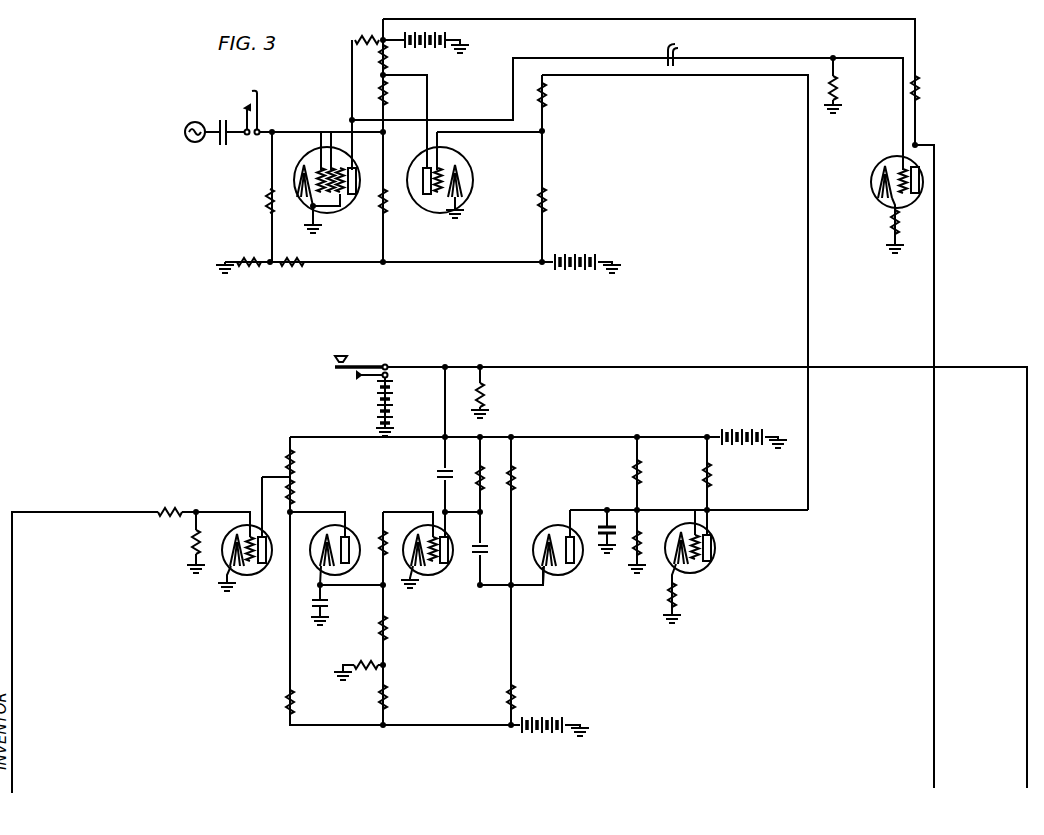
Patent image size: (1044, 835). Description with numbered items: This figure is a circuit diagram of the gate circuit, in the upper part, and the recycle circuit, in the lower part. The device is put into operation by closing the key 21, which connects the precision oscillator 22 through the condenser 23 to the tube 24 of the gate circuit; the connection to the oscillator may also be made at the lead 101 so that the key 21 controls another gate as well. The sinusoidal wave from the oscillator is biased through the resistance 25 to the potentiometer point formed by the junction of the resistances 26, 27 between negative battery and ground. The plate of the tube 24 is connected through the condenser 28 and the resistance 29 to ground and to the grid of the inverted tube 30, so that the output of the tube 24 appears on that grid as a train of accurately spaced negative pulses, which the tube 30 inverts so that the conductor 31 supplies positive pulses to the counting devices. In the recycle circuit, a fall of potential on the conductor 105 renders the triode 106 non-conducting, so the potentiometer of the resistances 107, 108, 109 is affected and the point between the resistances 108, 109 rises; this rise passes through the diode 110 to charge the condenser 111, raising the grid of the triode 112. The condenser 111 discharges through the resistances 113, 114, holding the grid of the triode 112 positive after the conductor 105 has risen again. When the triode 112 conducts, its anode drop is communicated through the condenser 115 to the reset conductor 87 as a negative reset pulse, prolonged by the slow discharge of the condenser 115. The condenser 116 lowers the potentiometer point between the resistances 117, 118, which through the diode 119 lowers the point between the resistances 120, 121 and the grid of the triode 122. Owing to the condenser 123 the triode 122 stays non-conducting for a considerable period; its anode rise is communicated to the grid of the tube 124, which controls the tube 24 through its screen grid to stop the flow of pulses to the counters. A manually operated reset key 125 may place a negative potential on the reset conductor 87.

The key 21 is at (259, 100).
The precision oscillator 22 is at (190, 142).
The condenser 23 is at (221, 118).
The tube 24 is at (333, 213).
The resistance 25 is at (262, 203).
The resistance 26 is at (292, 268).
The resistance 27 is at (250, 268).
The condenser 28 is at (676, 46).
The resistance 29 is at (841, 92).
The inverted tube 30 is at (871, 178).
The conductor 31 is at (934, 768).
The reset conductor 87 is at (516, 368).
The lead 101 is at (274, 129).
The conductor 105 is at (54, 512).
The triode 106 is at (247, 577).
The resistance 107 is at (295, 460).
The resistance 108 is at (295, 490).
The resistance 109 is at (285, 702).
The diode 110 is at (348, 530).
The condenser 111 is at (330, 600).
The triode 112 is at (433, 576).
The resistance 113 is at (390, 633).
The resistance 114 is at (356, 662).
The condenser 115 is at (437, 476).
The condenser 116 is at (500, 535).
The resistance 117 is at (516, 480).
The resistance 118 is at (505, 702).
The diode 119 is at (565, 575).
The resistance 120 is at (642, 478).
The resistance 121 is at (643, 547).
The triode 122 is at (700, 572).
The condenser 123 is at (598, 524).
The tube 124 is at (466, 180).
The reset key 125 is at (352, 361).